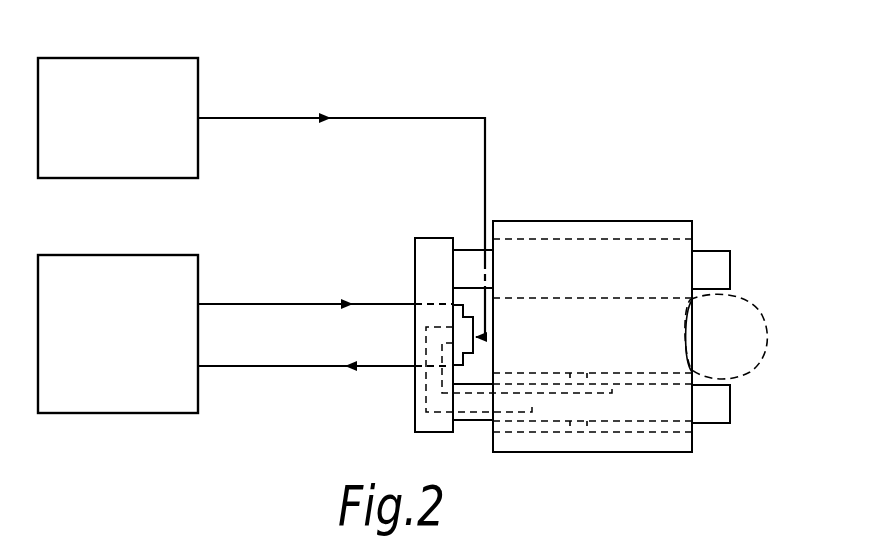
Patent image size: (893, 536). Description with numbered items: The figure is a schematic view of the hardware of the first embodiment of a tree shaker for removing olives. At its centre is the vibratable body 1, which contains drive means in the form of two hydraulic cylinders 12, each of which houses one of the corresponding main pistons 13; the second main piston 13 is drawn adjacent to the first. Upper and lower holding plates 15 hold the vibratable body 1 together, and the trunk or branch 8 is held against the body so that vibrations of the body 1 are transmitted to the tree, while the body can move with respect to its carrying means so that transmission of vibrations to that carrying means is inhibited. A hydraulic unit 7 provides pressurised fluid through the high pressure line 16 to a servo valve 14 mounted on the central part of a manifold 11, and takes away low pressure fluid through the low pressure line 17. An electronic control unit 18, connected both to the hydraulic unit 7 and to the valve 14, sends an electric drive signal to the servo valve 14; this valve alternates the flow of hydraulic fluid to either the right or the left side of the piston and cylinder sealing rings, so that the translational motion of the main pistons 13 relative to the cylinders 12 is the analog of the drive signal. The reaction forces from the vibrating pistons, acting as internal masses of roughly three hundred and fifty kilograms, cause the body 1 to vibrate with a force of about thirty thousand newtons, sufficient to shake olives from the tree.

The vibratable body 1 is at (593, 175).
The hydraulic unit 7 is at (78, 398).
The trunk or branch 8 is at (746, 337).
The manifold 11 is at (428, 268).
The hydraulic cylinder 12 is at (542, 250).
The main piston 13 is at (732, 272).
The servo valve 14 is at (455, 333).
The holding plate 15 is at (607, 330).
The high pressure line 16 is at (240, 303).
The low pressure line 17 is at (243, 367).
The electronic control unit 18 is at (137, 70).